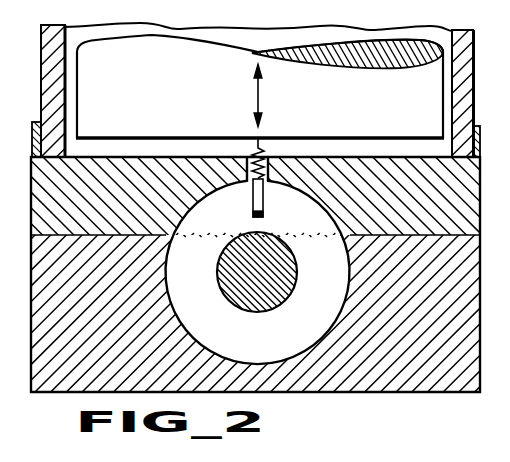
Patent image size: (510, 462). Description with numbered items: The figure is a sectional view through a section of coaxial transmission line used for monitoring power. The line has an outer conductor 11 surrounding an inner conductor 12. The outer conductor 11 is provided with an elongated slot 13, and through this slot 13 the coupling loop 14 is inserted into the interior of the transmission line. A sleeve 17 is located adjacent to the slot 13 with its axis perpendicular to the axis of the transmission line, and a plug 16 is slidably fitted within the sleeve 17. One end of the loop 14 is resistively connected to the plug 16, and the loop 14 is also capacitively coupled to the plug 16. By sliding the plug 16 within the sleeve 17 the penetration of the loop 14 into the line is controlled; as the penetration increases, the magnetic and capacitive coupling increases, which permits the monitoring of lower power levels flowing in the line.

The outer conductor 11 is at (471, 190).
The inner conductor 12 is at (260, 306).
The slot 13 is at (250, 181).
The coupling loop 14 is at (263, 205).
The plug 16 is at (369, 109).
The sleeve 17 is at (466, 66).